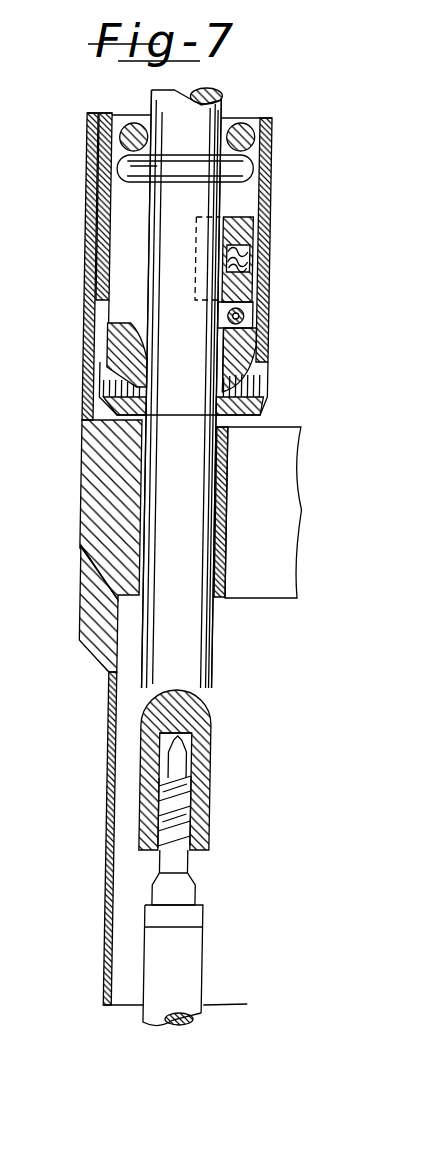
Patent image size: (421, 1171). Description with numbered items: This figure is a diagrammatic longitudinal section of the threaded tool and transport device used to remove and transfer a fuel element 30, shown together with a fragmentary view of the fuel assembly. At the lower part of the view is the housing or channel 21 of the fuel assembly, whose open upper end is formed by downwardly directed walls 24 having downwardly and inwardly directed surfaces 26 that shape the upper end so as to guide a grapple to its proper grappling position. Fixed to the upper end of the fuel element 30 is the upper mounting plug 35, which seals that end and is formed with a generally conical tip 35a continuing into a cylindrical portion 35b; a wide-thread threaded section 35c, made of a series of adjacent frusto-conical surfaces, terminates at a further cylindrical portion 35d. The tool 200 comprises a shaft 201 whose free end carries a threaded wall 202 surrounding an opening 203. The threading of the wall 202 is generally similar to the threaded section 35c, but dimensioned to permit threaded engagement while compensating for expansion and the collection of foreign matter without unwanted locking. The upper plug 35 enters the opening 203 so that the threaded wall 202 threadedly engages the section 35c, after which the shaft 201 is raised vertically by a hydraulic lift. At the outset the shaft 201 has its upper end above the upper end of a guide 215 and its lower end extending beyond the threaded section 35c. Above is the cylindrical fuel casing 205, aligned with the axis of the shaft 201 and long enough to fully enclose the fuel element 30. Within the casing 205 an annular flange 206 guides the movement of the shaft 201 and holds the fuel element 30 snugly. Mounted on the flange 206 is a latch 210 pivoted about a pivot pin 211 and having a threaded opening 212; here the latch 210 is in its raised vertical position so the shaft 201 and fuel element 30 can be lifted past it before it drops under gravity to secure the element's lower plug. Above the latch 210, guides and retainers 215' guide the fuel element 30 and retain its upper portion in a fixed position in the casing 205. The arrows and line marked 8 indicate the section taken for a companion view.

The section line 8- 8 is at (82, 206).
The housing or channel 21 is at (119, 856).
The downwardly directed walls 24 is at (92, 629).
The downwardly and inwardly directed surfaces 26 is at (105, 558).
The fuel element 30 is at (212, 964).
The upper mounting plug 35 is at (211, 821).
The conical tip 35a is at (212, 736).
The cylindrical portion 35b is at (195, 761).
The threaded section 35c is at (191, 853).
The cylindrical portion 35d is at (203, 894).
The tool 200 is at (238, 640).
The shaft 201 is at (214, 659).
The threaded wall 202 is at (178, 781).
The opening 203 is at (180, 734).
The fuel casing 205 is at (274, 127).
The annular flange 206 is at (129, 356).
The latch 210 is at (254, 233).
The pivot pin 211 is at (243, 318).
The threaded opening 212 is at (247, 261).
The guide 215 is at (157, 356).
The guides and retainers 215' is at (229, 154).